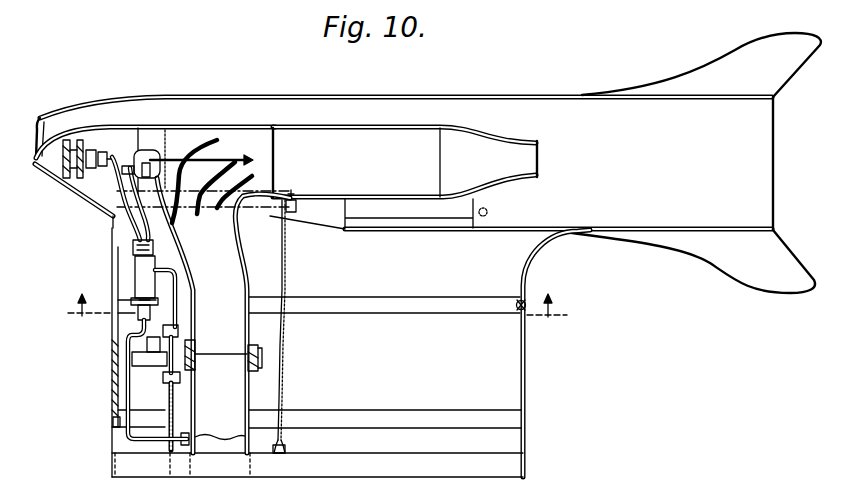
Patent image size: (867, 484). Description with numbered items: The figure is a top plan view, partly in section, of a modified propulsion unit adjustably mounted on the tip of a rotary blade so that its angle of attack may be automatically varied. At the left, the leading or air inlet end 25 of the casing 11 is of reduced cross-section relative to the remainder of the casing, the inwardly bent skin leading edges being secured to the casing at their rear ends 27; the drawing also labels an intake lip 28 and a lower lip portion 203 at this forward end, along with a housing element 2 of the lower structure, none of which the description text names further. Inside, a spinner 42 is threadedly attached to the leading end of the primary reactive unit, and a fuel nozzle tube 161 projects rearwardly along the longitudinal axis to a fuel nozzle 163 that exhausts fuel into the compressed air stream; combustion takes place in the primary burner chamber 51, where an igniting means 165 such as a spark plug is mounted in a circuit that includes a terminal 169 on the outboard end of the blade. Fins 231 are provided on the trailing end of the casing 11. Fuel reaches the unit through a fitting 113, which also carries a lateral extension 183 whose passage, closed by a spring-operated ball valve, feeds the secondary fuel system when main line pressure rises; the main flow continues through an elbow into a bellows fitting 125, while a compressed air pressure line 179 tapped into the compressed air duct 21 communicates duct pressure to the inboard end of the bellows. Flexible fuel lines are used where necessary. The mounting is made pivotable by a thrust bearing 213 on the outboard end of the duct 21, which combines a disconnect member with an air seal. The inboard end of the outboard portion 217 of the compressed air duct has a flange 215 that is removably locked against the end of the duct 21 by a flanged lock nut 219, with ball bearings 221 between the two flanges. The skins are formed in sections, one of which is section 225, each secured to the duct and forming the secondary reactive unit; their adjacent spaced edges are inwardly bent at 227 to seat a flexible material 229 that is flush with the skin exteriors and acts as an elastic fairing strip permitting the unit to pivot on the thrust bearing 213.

The housing 2 is at (375, 401).
The casing 11 is at (281, 91).
The compressed air duct 21 is at (255, 397).
The air inlet end of reduced cross-section 25 is at (55, 133).
The rear ends of rearwardly bent portions 27 is at (164, 127).
The intake lip 28 is at (44, 117).
The spinner 42 is at (89, 131).
The primary burner chamber 51 is at (338, 124).
The fitting 113 is at (163, 368).
The bellows fitting 125 is at (143, 273).
The fuel nozzle tube 161 is at (176, 164).
The fuel nozzle 163 is at (238, 157).
The igniting means 165 is at (291, 212).
The terminal 169 is at (286, 449).
The compressed air pressure line 179 is at (130, 399).
The lateral extension 183 is at (147, 372).
The lower intake lip 203 is at (60, 190).
The thrust bearing 213 is at (258, 344).
The flange 215 is at (258, 353).
The outboard portion of compressed air duct 217 is at (246, 258).
The flanged lock nut 219 is at (260, 368).
The ball bearings 221 is at (262, 335).
The skin section 225 is at (540, 256).
The inwardly bent skin edges 227 is at (528, 305).
The flexible material 229 is at (133, 356).
The fins 231 is at (735, 67).